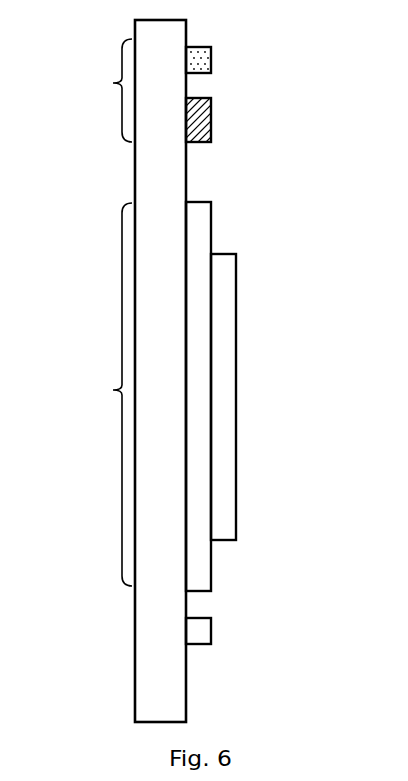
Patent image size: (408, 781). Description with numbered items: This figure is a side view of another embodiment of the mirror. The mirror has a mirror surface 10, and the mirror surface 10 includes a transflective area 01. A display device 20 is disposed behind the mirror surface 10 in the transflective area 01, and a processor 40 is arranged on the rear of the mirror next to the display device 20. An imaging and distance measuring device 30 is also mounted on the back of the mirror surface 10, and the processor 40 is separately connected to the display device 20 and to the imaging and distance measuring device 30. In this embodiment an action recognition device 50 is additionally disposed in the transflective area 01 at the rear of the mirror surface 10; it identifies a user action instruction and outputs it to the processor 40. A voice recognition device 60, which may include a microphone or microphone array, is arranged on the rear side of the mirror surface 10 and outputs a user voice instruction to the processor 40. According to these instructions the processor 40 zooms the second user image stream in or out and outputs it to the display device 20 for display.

The mirror surface 10 is at (135, 657).
The display device 20 is at (197, 436).
The imaging and distance measuring device 30 is at (205, 115).
The processor 40 is at (224, 321).
The action recognition device 50 is at (205, 60).
The voice recognition device 60 is at (200, 633).
The transflective area 01 is at (102, 312).